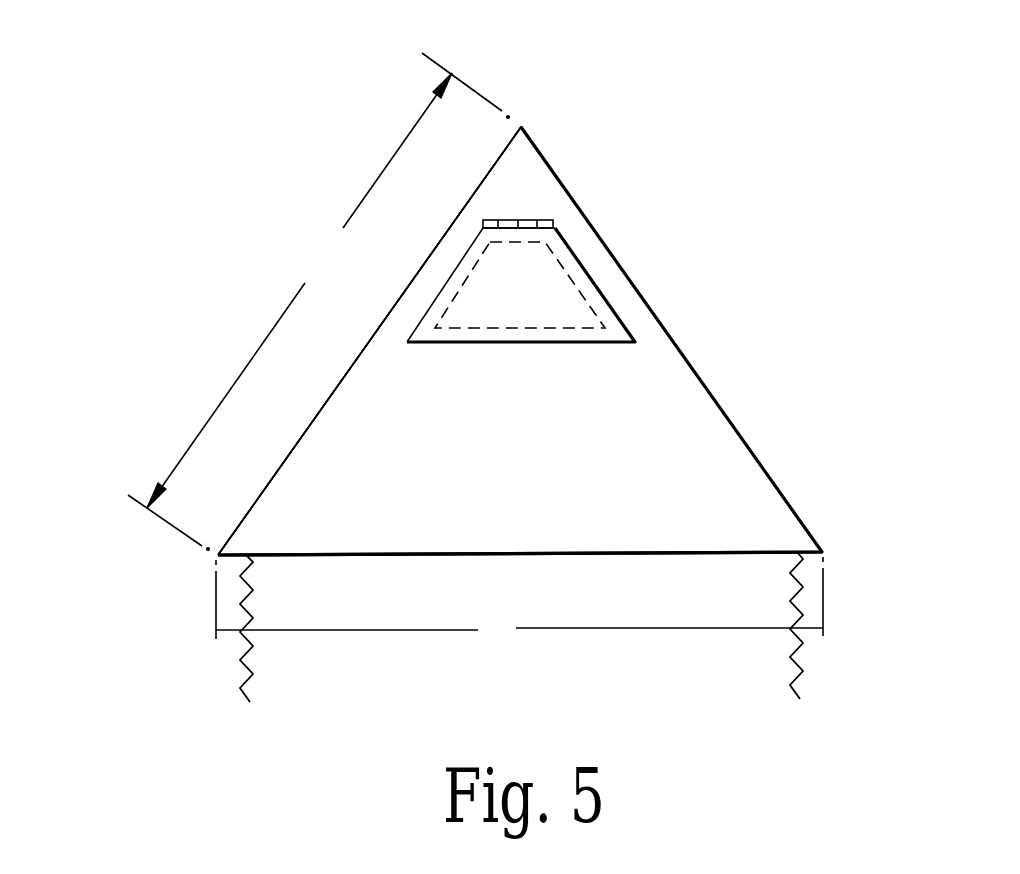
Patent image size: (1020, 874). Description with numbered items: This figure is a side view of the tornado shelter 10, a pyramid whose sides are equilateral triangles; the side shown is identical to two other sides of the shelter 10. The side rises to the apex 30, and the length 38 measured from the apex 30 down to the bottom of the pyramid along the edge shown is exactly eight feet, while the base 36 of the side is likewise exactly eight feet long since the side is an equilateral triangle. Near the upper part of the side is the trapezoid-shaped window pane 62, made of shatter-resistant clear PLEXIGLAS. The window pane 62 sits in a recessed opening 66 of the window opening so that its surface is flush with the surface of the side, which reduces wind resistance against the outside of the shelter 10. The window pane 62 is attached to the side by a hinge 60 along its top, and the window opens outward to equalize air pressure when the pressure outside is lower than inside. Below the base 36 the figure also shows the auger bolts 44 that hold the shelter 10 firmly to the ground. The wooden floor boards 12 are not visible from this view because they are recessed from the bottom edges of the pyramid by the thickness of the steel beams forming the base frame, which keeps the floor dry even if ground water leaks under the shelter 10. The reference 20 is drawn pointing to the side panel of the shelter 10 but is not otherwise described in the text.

The shelter 10 is at (712, 268).
The wooden floor boards 12 is at (408, 568).
The side panel 20 is at (508, 166).
The apex 30 is at (521, 124).
The base 36 is at (519, 601).
The length 38 is at (318, 301).
The break lines / extensions 44 is at (248, 682).
The hinge 60 is at (521, 220).
The window pane 62 is at (605, 343).
The recessed opening 66 is at (523, 328).